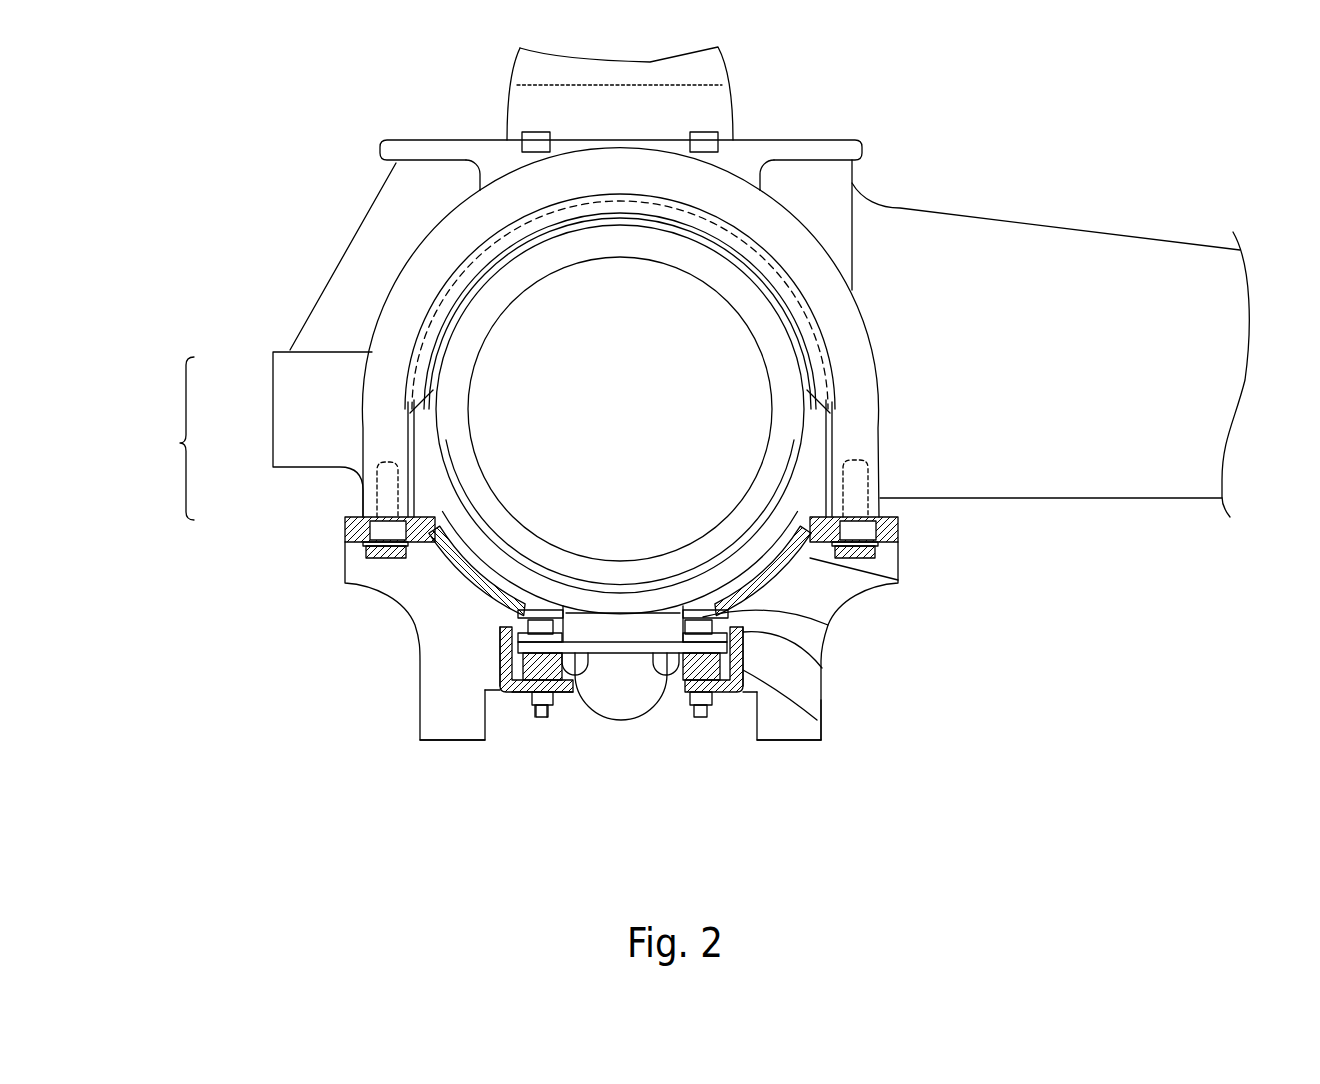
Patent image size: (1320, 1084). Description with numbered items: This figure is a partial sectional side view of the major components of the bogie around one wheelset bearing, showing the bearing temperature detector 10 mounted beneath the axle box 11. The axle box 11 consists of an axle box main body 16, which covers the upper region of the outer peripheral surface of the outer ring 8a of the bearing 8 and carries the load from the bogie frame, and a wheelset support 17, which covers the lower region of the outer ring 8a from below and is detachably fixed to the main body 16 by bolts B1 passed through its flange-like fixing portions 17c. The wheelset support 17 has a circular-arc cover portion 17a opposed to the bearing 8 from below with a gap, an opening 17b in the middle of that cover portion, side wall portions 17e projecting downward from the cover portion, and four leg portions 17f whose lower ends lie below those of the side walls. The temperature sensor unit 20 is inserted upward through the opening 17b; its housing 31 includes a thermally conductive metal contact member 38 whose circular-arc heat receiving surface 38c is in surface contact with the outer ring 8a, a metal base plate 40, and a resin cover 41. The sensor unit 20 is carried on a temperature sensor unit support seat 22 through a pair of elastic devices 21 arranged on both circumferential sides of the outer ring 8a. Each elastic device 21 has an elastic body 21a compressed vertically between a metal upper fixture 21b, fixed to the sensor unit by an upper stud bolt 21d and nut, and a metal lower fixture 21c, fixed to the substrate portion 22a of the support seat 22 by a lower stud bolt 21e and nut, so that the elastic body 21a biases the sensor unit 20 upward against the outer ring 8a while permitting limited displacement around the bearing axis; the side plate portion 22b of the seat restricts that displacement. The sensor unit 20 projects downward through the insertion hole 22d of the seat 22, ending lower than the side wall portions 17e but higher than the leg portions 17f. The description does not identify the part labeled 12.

The bearing 8 is at (817, 443).
The outer ring 8a is at (780, 533).
The bearing temperature detector 10 is at (836, 726).
The axle box 11 is at (170, 438).
The rack housing 12 is at (1187, 260).
The axle box main body 16 is at (273, 352).
The wheelset support 17 is at (343, 530).
The cover portion 17a is at (463, 593).
The opening 17b is at (533, 613).
The fixing portions 17c is at (345, 548).
The side wall portions 17e is at (498, 663).
The leg portions 17f is at (432, 742).
The temperature sensor unit 20 is at (632, 728).
The elastic device 21 is at (505, 690).
The elastic body 21a is at (523, 680).
The upper fixture 21b is at (840, 722).
The lower fixture 21c is at (745, 700).
The upper stud bolt 21d is at (828, 626).
The lower stud bolt 21e is at (703, 712).
The temperature sensor unit support seat 22 is at (498, 688).
The substrate portion 22a is at (512, 700).
The side plate portion 22b is at (500, 630).
The insertion hole 22d is at (562, 695).
The housing 31 is at (657, 715).
The contact member 38 is at (660, 630).
The heat receiving surface 38c is at (637, 617).
The base plate 40 is at (577, 650).
The cover 41 is at (607, 712).
The bolts B1 is at (360, 556).